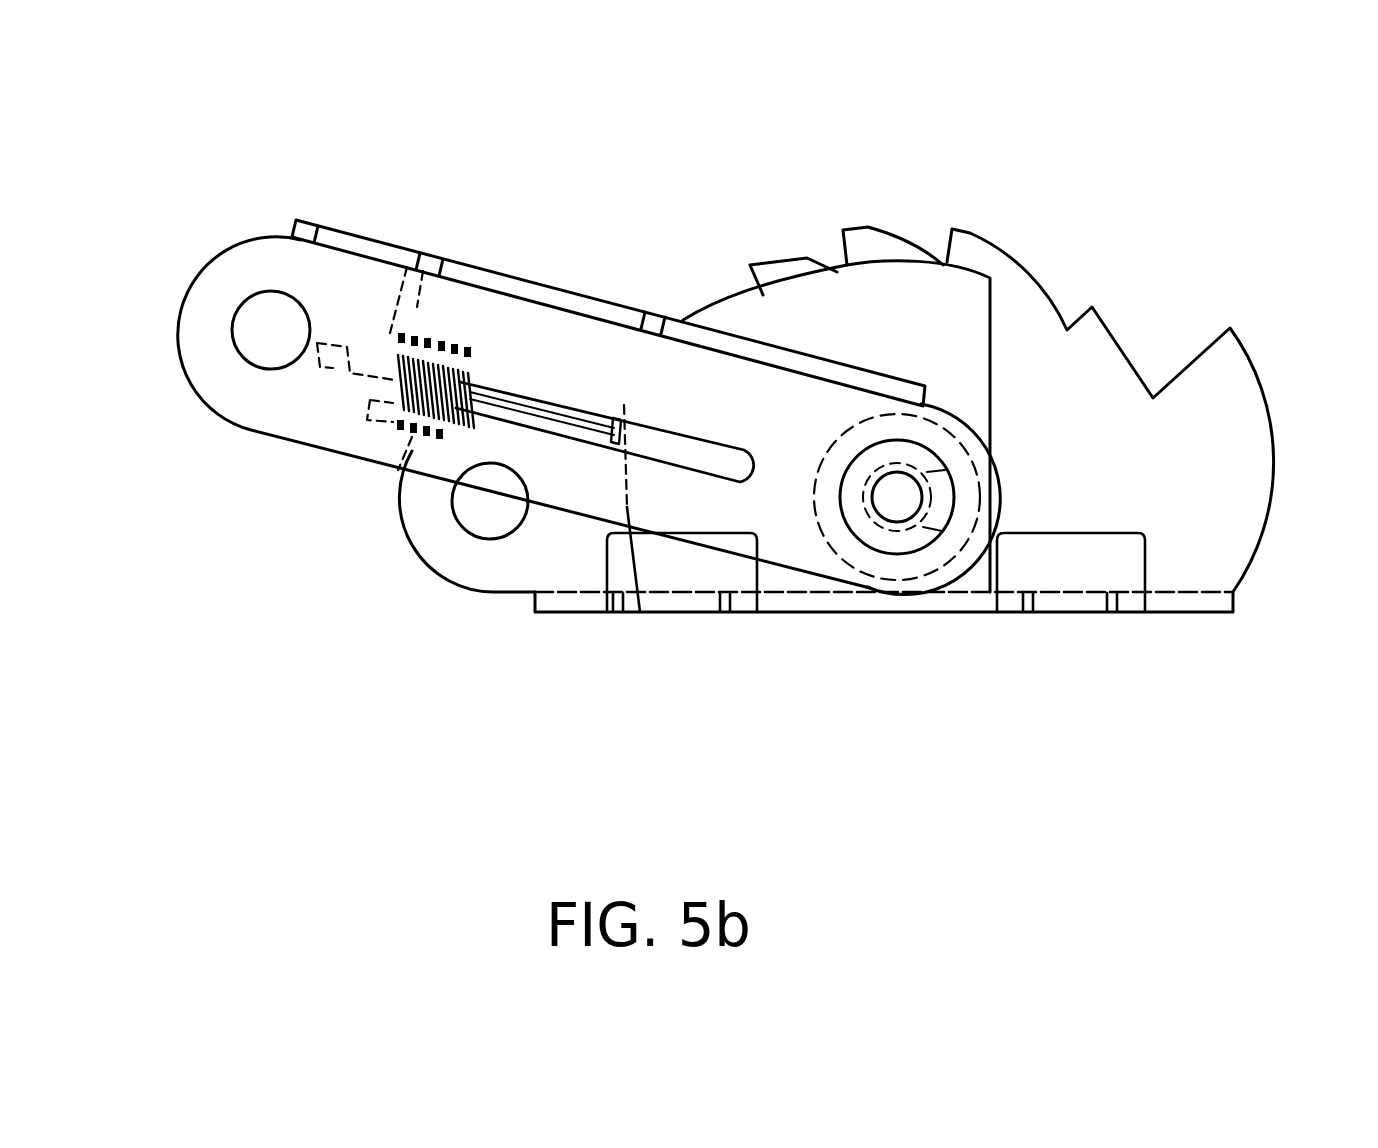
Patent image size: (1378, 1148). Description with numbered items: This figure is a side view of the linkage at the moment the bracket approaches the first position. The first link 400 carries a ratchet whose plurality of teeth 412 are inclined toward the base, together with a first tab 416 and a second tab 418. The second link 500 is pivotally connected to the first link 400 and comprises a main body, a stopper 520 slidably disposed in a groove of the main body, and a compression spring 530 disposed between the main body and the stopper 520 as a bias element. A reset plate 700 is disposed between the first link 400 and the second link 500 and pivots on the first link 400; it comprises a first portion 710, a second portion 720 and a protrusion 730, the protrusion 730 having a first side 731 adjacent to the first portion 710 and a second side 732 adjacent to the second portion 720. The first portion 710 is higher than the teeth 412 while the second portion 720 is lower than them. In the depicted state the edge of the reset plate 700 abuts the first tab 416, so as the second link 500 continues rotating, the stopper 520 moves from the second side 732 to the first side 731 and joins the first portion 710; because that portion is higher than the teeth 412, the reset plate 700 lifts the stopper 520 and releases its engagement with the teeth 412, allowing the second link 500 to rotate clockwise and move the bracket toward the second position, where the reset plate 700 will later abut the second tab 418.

The second link 500 is at (194, 246).
The stopper 520 is at (550, 400).
The compression spring 530 is at (387, 425).
The reset plate 700 is at (960, 322).
The first portion 710 is at (622, 490).
The second portion 720 is at (675, 372).
The protrusion 730 is at (687, 112).
The first side 731 is at (628, 412).
The second side 732 is at (657, 378).
The first link 400 is at (1215, 633).
The teeth 412 is at (1027, 264).
The first tab 416 is at (686, 600).
The second tab 418 is at (1070, 600).